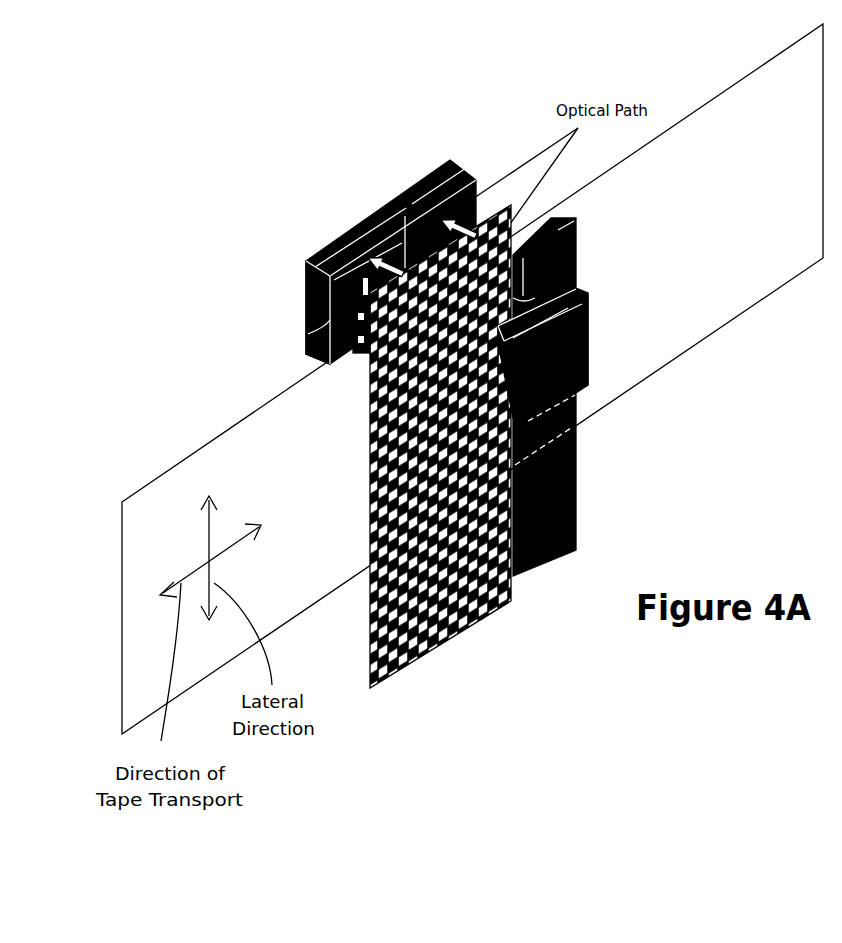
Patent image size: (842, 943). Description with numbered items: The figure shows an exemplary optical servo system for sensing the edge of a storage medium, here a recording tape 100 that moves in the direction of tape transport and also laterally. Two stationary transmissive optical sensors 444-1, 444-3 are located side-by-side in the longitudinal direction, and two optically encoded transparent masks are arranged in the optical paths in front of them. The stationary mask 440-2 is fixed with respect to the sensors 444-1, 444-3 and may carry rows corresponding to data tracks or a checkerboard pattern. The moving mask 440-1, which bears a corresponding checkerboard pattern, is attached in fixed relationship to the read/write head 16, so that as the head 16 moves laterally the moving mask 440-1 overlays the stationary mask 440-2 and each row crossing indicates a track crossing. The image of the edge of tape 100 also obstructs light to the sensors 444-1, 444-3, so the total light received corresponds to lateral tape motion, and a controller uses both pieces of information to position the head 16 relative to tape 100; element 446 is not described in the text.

The tape 100 is at (233, 440).
The stationary transmissive optical sensor 444-1 is at (404, 178).
The stationary transmissive optical sensor 444-3 is at (294, 292).
The stationary mask 440-2 is at (308, 326).
The moving mask 440-1 is at (445, 635).
The read/write head 16 is at (570, 490).
The optical detector module 446 is at (582, 349).